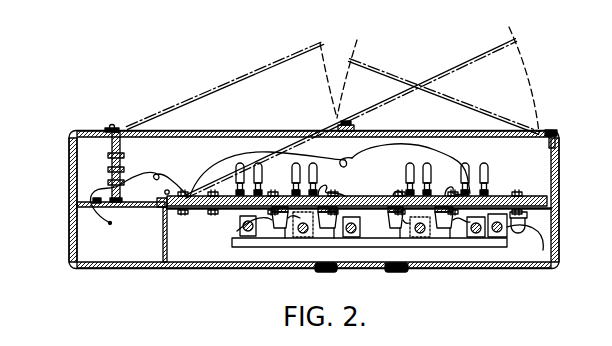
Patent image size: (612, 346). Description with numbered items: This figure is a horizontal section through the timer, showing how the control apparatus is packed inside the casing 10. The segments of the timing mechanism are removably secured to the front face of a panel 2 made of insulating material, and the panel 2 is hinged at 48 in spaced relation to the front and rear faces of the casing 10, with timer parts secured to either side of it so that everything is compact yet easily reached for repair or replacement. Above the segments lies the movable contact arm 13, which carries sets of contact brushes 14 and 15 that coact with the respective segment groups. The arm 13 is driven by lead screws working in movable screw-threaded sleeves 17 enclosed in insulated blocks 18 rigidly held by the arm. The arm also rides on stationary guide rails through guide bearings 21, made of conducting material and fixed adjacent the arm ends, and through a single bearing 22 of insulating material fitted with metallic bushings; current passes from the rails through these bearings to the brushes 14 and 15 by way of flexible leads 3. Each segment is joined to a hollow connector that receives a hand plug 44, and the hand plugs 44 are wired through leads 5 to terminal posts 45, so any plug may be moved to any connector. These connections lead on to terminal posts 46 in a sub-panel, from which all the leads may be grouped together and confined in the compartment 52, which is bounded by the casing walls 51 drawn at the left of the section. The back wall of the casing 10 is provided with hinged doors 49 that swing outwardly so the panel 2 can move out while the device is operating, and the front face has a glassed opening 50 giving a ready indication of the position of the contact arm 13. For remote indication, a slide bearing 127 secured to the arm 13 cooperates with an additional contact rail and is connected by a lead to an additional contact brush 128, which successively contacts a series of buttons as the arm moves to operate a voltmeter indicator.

The panel 2 is at (497, 196).
The flexible leads 3 is at (263, 247).
The leads 5 is at (380, 150).
The casing 10 is at (557, 198).
The movable contact arm 13 is at (480, 240).
The contact brushes 14 is at (285, 238).
The contact brushes 15 is at (336, 238).
The screw-threaded sleeves 17 is at (425, 240).
The insulated blocks 18 is at (315, 247).
The guide bearings 21 is at (237, 231).
The bearing 22 is at (361, 240).
The hand plugs 44 is at (489, 177).
The terminal posts 45 is at (212, 213).
The terminal posts 46 is at (127, 166).
The hinge 48 is at (164, 192).
The hinged doors 49 is at (270, 72).
The glassed opening 50 is at (373, 269).
The partition wall 51 is at (69, 175).
The compartment 52 is at (113, 259).
The slide bearing 127 is at (513, 240).
The contact brush 128 is at (543, 240).